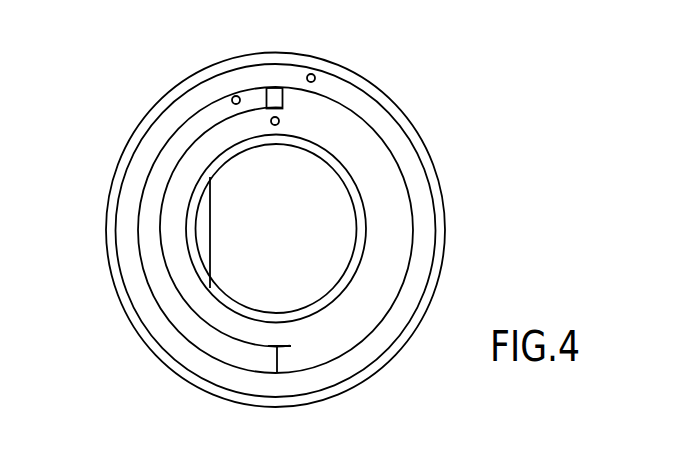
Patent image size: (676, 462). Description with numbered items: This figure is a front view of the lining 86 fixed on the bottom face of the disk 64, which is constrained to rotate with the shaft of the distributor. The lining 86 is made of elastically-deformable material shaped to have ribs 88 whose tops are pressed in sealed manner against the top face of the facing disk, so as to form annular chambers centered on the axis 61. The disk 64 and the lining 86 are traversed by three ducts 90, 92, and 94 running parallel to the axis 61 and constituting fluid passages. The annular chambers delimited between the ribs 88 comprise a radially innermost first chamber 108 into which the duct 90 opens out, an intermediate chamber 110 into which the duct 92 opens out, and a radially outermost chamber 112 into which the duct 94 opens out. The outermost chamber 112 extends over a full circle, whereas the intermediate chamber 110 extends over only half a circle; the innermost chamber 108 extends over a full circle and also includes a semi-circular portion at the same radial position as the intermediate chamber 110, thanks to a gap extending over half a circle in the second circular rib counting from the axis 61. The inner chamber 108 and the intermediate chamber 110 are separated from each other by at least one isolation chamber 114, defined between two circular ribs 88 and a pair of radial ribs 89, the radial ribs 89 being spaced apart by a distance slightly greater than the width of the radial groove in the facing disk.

The axis 61 is at (274, 230).
The disk 64 is at (211, 233).
The lining 86 is at (100, 226).
The ribs 88 is at (217, 297).
The radial ribs 89 is at (283, 97).
The duct 90 is at (276, 125).
The duct 92 is at (236, 96).
The duct 94 is at (315, 77).
The first chamber 108 is at (382, 250).
The intermediate chamber 110 is at (167, 153).
The outermost chamber 112 is at (392, 125).
The isolation chamber 114 is at (272, 88).